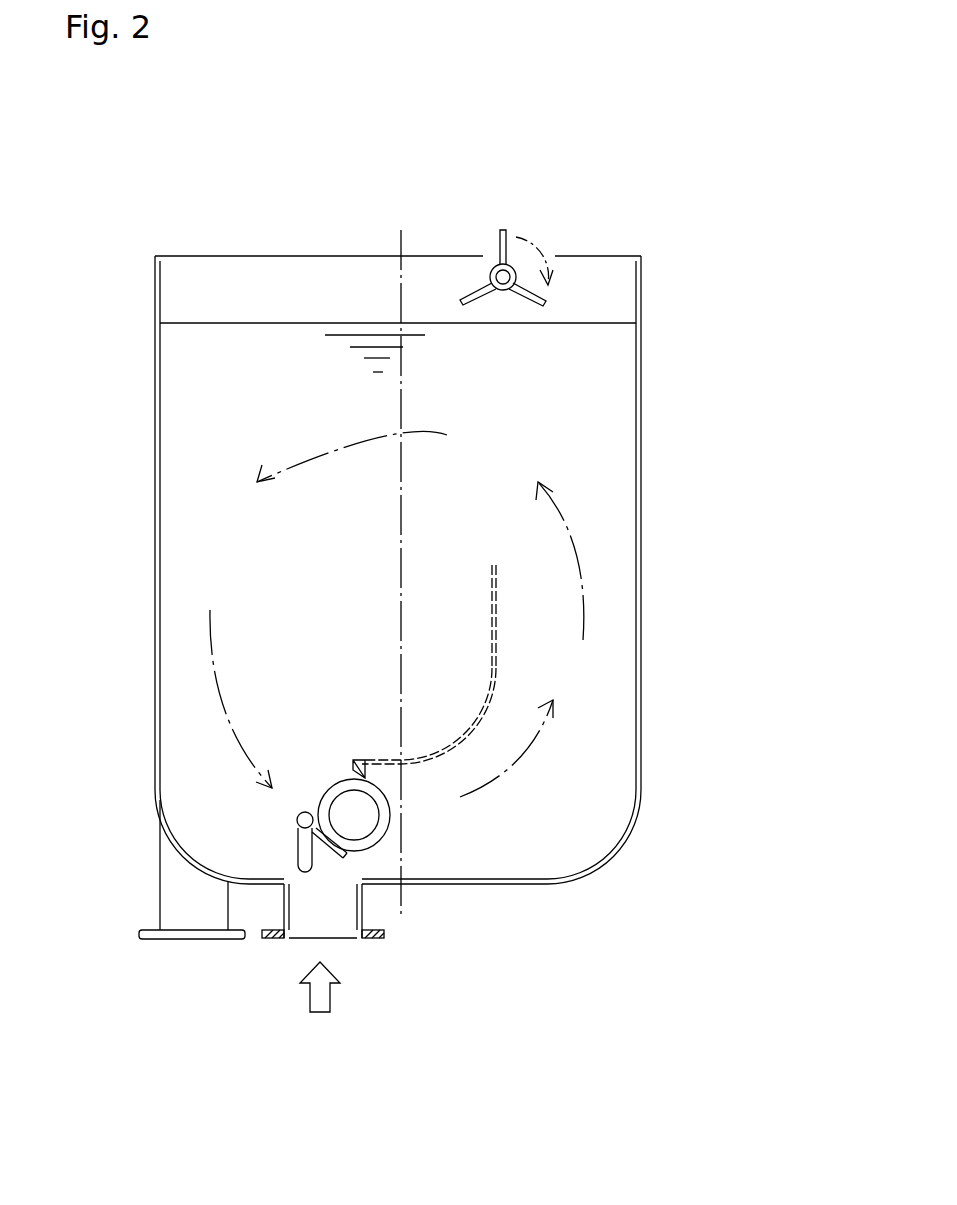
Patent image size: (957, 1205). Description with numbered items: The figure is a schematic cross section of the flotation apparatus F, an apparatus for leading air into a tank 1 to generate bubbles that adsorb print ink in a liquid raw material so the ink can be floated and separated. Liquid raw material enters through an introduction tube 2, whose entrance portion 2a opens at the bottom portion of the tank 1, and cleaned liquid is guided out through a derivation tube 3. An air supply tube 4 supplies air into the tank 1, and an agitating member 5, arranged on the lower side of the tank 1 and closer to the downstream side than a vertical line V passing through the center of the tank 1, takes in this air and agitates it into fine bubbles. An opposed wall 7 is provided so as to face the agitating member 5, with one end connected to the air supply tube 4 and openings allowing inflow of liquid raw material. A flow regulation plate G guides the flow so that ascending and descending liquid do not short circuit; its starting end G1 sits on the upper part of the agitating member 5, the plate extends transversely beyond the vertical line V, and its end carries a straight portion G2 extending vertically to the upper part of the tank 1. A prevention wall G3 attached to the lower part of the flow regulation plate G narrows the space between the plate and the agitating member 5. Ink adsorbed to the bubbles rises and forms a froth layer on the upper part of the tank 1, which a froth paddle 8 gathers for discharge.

The tank 1 is at (640, 518).
The introduction tube 2 is at (325, 912).
The entrance portion 2a is at (325, 878).
The derivation tube 3 is at (175, 897).
The air supply tube 4 is at (305, 812).
The agitating member 5 is at (388, 823).
The opposed wall 7 is at (324, 843).
The froth paddle 8 is at (500, 263).
The flow regulation plate G is at (429, 687).
The starting end G1 is at (358, 765).
The straight portion G2 is at (497, 638).
The prevention wall G3 is at (363, 775).
The vertical line V is at (403, 398).
The flotation apparatus F is at (718, 208).